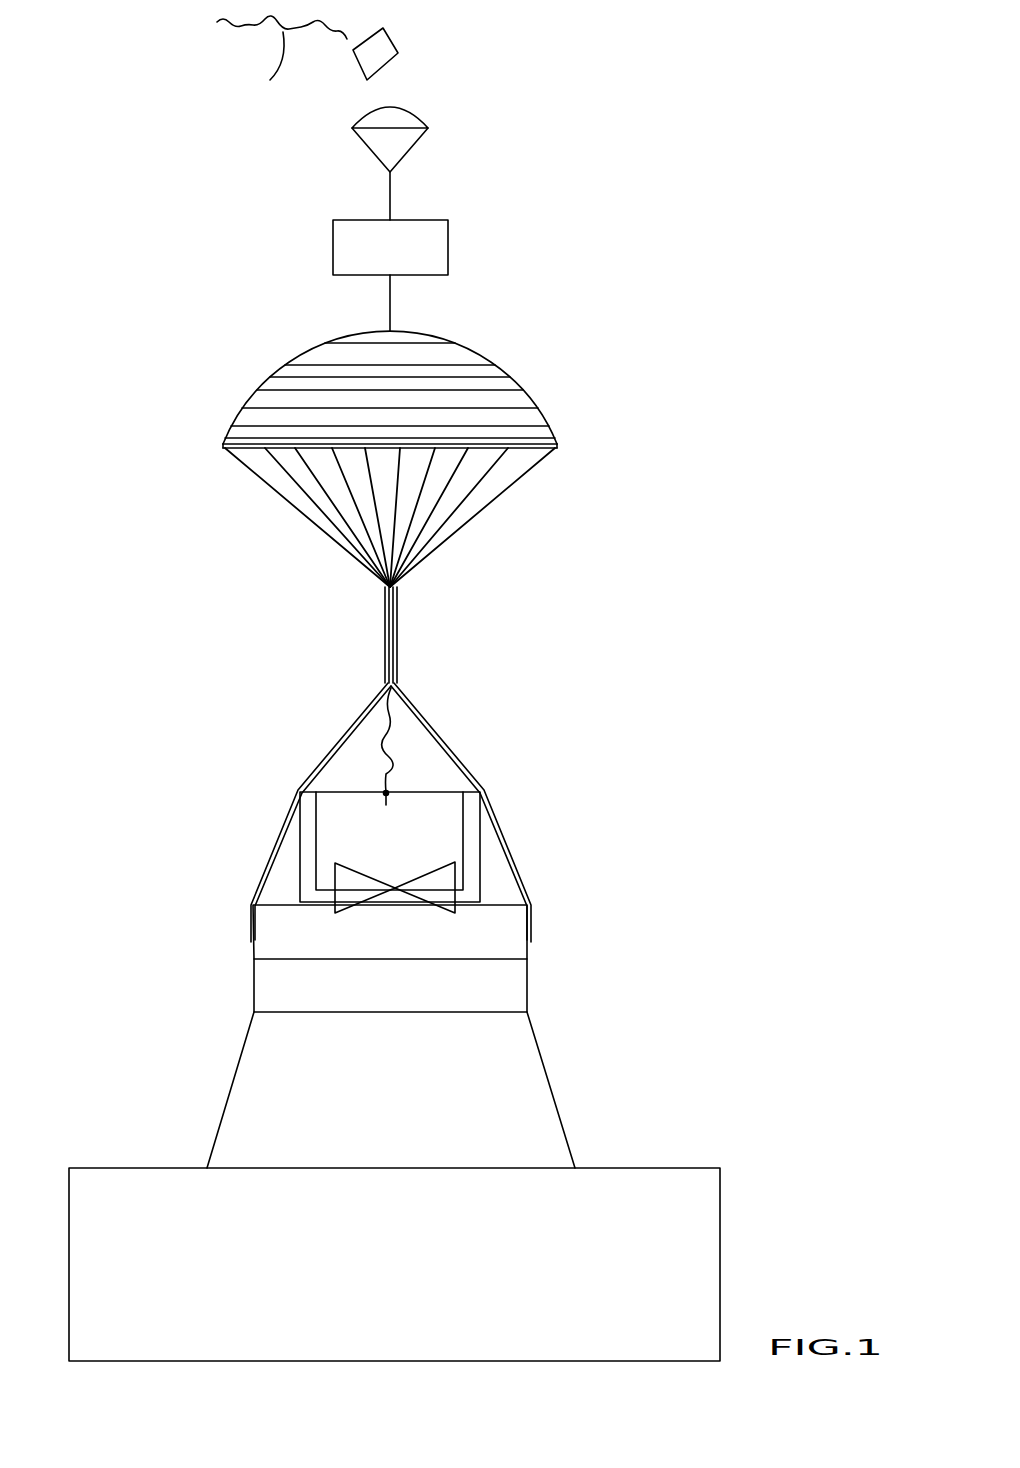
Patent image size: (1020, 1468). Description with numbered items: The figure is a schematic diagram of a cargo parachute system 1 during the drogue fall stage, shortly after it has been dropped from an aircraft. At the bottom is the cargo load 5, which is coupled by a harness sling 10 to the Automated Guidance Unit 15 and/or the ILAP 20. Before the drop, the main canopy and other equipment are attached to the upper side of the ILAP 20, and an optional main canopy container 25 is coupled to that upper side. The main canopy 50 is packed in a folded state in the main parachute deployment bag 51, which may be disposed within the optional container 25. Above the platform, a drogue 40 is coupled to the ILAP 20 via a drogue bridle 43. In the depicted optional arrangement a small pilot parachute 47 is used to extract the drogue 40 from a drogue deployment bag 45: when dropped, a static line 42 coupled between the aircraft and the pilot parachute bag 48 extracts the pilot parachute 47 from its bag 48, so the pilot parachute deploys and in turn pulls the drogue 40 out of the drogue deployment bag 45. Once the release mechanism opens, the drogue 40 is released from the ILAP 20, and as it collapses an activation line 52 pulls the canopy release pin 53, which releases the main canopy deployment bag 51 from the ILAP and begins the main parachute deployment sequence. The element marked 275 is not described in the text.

The cargo parachute system 1 is at (128, 194).
The cargo load 5 is at (180, 1187).
The harness sling 10 is at (552, 1080).
The Automated Guidance Unit 15 is at (385, 917).
The ILAP 20 is at (531, 915).
The main canopy container 25 is at (483, 878).
The drogue 40 is at (208, 388).
The static line 42 is at (282, 60).
The drogue bridle 43 is at (273, 846).
The drogue deployment bag 45 is at (333, 248).
The pilot parachute 47 is at (397, 145).
The pilot parachute bag 48 is at (385, 55).
The main canopy 50 is at (316, 812).
The main parachute deployment bag 51 is at (456, 790).
The activation line 52 is at (391, 757).
The canopy release pin 53 is at (378, 788).
The valve 275 is at (325, 882).